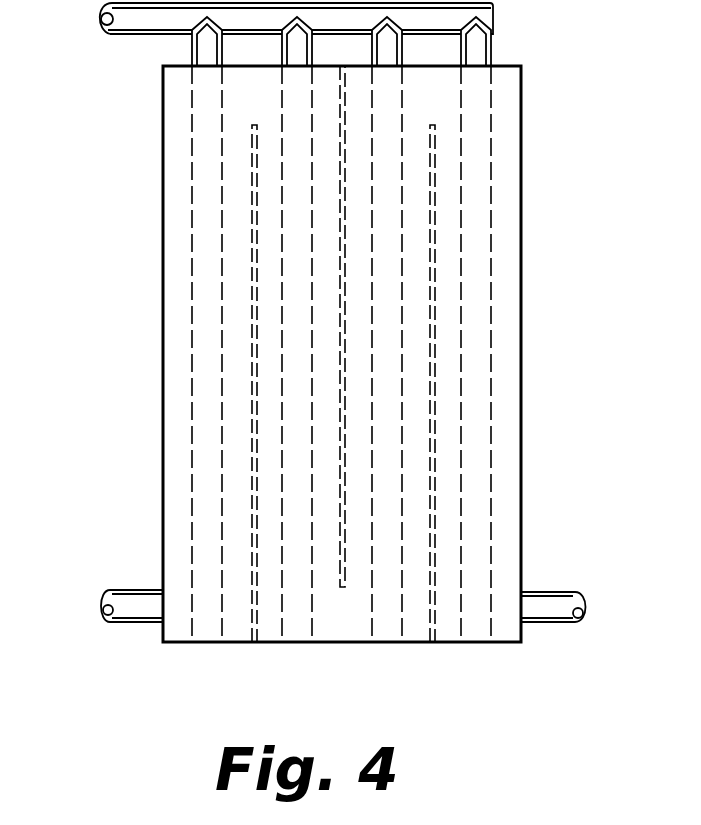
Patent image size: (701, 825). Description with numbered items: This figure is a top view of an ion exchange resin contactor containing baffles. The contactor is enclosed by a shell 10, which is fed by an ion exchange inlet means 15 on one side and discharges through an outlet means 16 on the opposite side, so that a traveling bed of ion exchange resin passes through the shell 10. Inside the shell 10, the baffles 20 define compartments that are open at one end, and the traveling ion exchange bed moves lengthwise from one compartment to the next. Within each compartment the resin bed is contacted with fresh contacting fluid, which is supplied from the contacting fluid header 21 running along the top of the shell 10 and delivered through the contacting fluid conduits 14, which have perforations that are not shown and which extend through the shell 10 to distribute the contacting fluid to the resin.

The shell 10 is at (163, 345).
The contacting fluid conduits 14 is at (292, 638).
The ion exchange inlet means 15 is at (137, 612).
The outlet means 16 is at (553, 608).
The baffles 20 is at (250, 127).
The contacting fluid header 21 is at (128, 20).